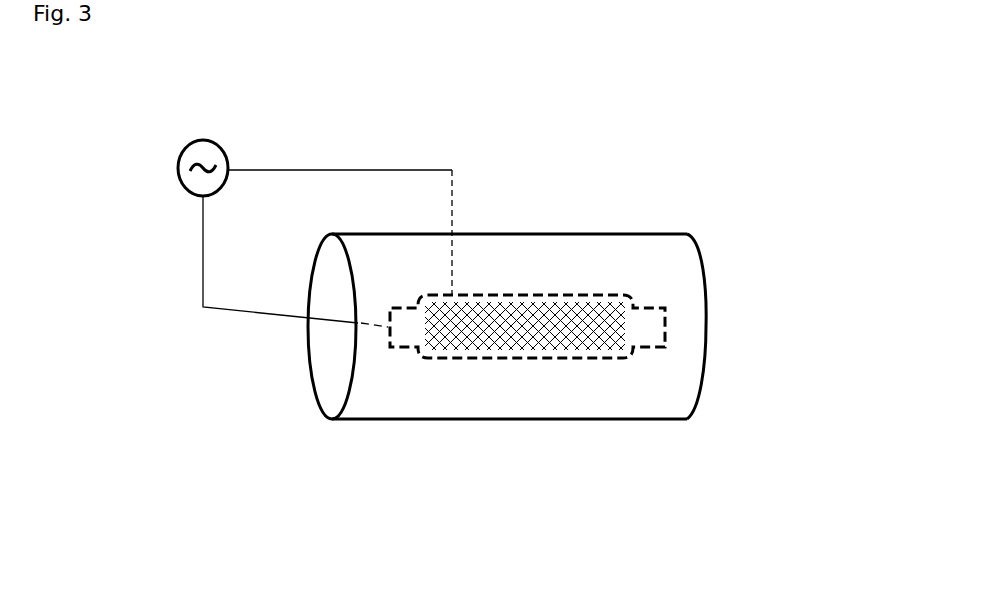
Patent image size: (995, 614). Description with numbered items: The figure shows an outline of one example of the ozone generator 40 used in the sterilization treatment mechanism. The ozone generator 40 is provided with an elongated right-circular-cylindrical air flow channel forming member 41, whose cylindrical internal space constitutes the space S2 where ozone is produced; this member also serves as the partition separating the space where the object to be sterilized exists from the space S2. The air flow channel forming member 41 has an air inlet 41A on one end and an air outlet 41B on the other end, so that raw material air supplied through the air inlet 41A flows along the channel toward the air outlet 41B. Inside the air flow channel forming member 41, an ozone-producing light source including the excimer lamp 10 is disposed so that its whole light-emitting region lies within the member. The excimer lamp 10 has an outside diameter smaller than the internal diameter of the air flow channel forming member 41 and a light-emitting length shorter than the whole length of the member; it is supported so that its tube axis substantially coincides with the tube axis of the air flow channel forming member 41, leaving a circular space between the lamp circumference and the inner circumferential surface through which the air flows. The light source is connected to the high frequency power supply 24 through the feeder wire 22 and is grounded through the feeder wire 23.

The ozone generator 40 is at (766, 147).
The air flow channel forming member 41 is at (596, 233).
The air inlet 41A is at (333, 375).
The air outlet 41B is at (712, 342).
The excimer lamp 10 is at (510, 295).
The space where ozone is produced S2 is at (597, 380).
The high frequency power supply 24 is at (178, 158).
The feeder wire 22 is at (316, 170).
The feeder wire 23 is at (258, 318).